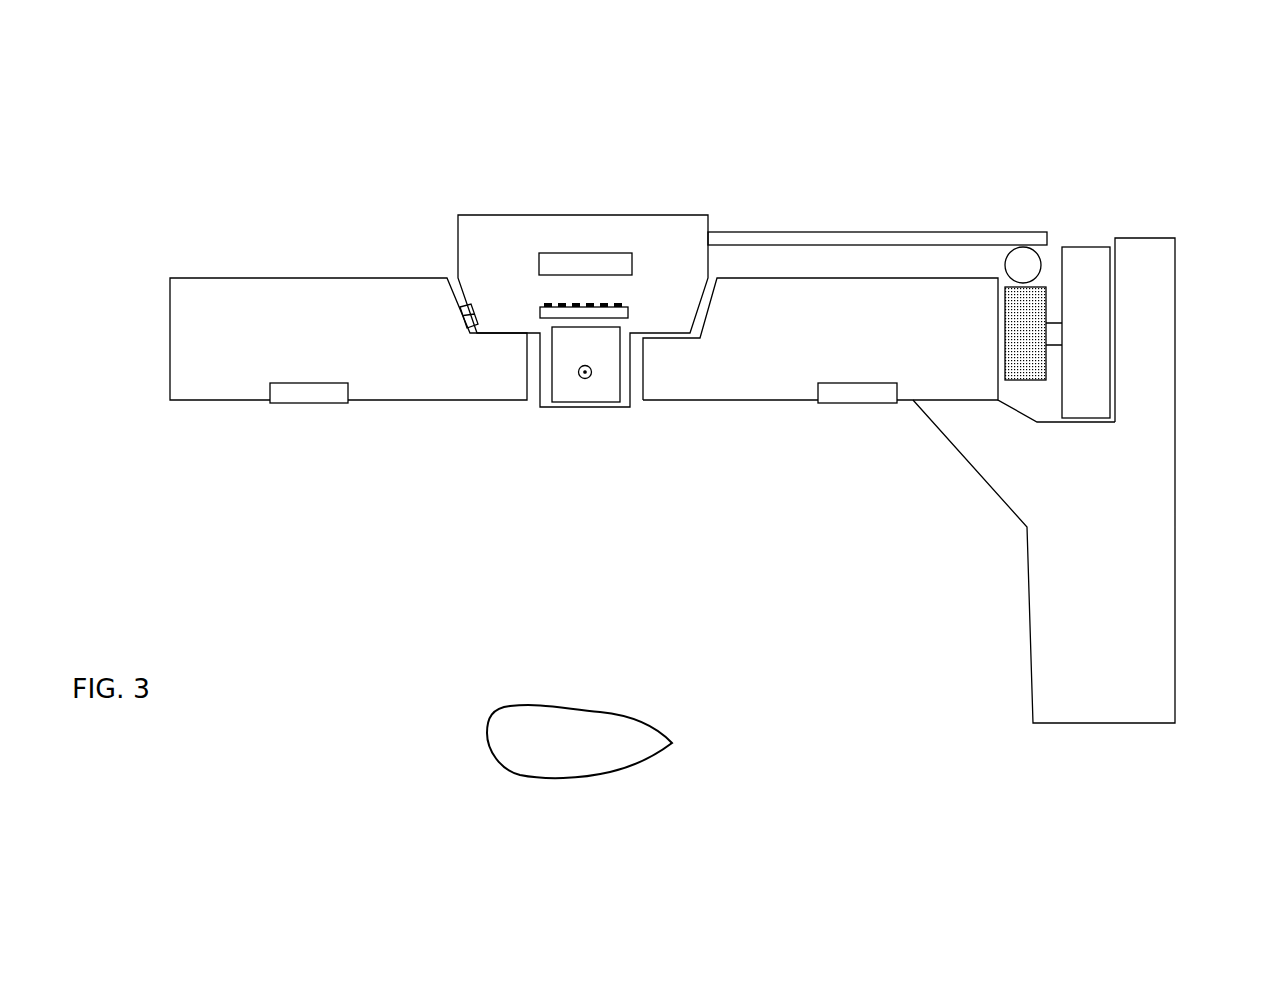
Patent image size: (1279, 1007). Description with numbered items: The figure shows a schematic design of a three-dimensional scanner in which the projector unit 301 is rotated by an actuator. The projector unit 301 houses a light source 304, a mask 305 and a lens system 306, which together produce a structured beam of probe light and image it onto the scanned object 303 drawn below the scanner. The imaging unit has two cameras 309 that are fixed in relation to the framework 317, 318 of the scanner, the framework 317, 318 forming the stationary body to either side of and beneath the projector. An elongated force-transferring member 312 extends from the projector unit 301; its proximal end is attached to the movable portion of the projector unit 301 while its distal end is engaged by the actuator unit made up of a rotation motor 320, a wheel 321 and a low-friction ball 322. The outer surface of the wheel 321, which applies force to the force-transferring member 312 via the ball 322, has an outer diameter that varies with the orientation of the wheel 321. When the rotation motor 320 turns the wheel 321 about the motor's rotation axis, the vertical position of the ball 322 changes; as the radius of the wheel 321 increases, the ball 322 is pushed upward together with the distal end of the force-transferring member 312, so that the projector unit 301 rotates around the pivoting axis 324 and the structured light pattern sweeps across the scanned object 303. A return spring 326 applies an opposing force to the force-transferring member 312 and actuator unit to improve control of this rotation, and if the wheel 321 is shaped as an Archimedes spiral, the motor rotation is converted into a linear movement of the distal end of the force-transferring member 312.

The projector unit 301 is at (657, 213).
The scanned object 303 is at (542, 741).
The light source 304 is at (548, 248).
The mask 305 is at (537, 308).
The lens system 306 is at (615, 385).
The cameras 309 is at (312, 404).
The force-transferring member 312 is at (877, 219).
The framework 317 is at (348, 316).
The framework 318 is at (1078, 480).
The rotation motor 320 is at (1088, 302).
The wheel 321 is at (1042, 285).
The low-friction ball 322 is at (1020, 258).
The pivoting axis 324 is at (580, 377).
The return spring 326 is at (462, 308).